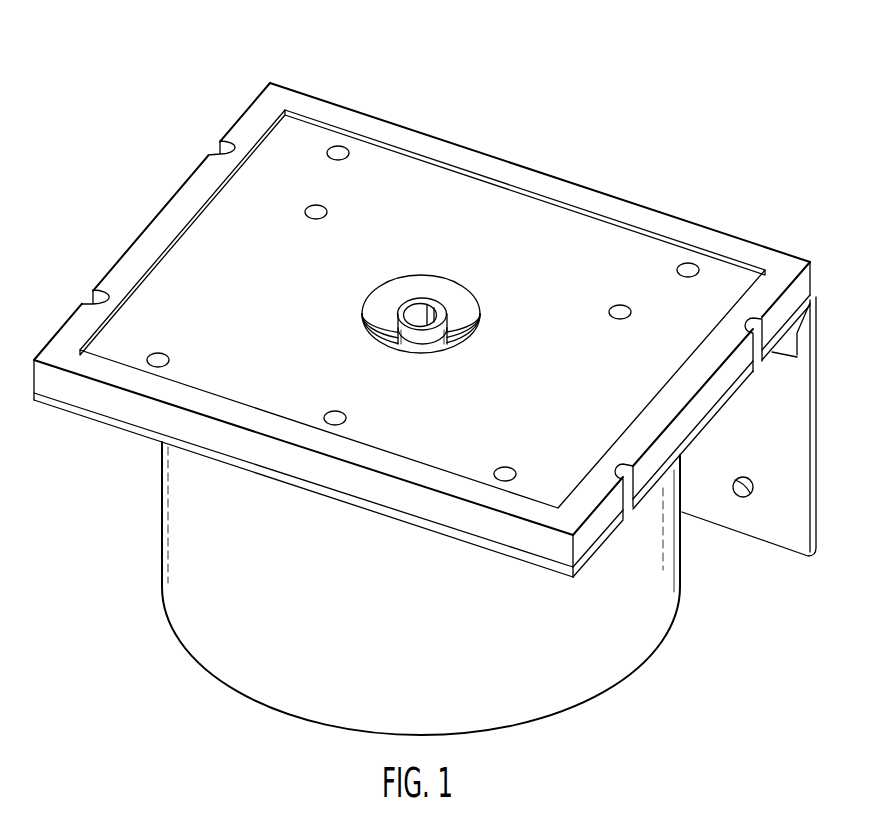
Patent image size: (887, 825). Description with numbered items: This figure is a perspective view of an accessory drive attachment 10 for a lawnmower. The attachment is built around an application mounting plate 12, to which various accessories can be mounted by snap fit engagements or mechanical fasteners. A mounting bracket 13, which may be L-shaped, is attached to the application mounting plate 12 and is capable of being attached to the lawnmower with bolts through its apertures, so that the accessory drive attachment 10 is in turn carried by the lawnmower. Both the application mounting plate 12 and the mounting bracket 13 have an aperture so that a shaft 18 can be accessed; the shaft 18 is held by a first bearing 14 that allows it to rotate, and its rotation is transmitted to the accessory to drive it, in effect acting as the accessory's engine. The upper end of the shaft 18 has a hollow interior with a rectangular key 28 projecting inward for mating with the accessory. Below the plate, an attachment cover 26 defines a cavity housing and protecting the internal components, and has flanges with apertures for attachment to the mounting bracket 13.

The accessory drive attachment 10 is at (466, 128).
The application mounting plate 12 is at (258, 285).
The mounting bracket 13 is at (797, 426).
The first bearing 14 is at (467, 310).
The shaft 18 is at (440, 340).
The attachment cover 26 is at (510, 700).
The key 28 is at (432, 307).